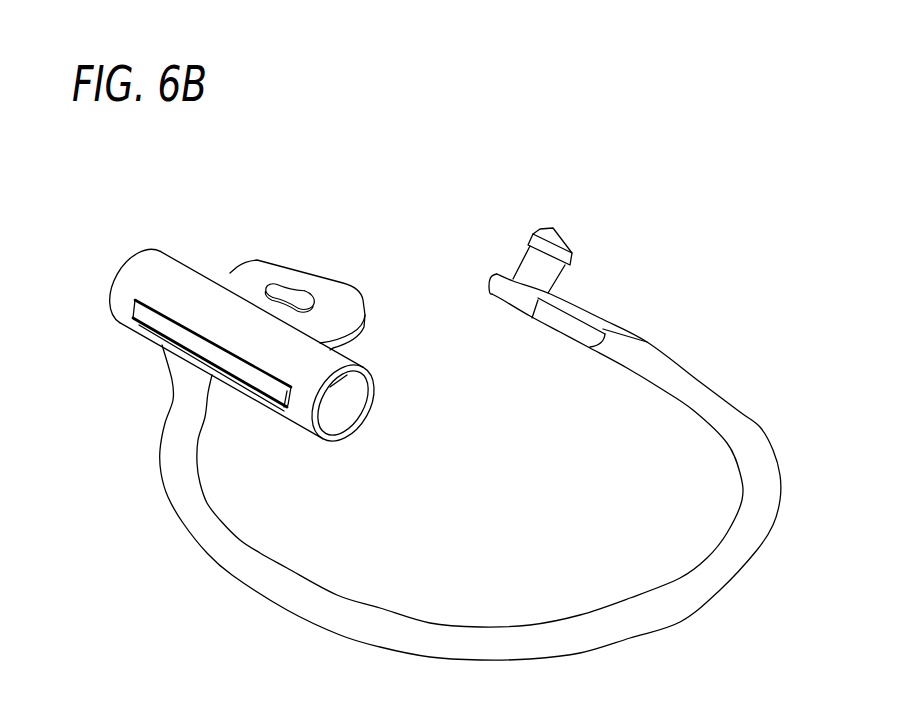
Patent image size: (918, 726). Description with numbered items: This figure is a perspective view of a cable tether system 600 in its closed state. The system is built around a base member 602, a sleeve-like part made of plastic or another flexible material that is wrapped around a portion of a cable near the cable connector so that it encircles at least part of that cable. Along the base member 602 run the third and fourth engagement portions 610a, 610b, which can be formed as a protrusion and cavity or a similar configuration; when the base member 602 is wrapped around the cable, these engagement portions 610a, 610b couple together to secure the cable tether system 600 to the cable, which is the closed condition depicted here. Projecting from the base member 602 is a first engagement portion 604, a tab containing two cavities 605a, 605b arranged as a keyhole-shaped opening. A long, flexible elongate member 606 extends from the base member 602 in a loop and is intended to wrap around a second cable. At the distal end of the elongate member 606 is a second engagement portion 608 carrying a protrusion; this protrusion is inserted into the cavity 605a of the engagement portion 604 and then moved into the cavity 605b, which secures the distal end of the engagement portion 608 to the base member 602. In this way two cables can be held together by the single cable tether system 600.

The cable tether system 600 is at (599, 93).
The base member 602 is at (143, 282).
The first engagement portion 604 is at (338, 302).
The cavity 605a is at (303, 296).
The cavity 605b is at (280, 284).
The elongate member 606 is at (230, 556).
The second engagement portion 608 is at (553, 250).
The third engagement portion 610a is at (150, 321).
The fourth engagement portion 610b is at (150, 320).